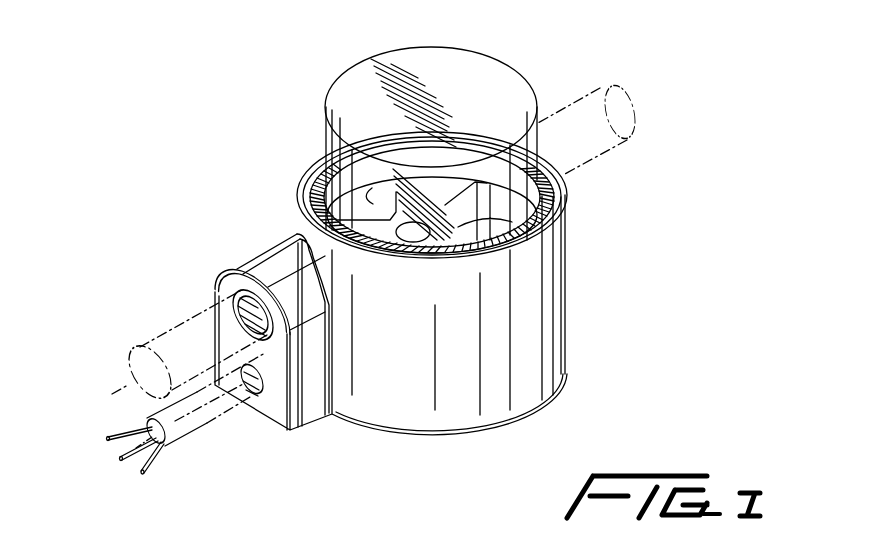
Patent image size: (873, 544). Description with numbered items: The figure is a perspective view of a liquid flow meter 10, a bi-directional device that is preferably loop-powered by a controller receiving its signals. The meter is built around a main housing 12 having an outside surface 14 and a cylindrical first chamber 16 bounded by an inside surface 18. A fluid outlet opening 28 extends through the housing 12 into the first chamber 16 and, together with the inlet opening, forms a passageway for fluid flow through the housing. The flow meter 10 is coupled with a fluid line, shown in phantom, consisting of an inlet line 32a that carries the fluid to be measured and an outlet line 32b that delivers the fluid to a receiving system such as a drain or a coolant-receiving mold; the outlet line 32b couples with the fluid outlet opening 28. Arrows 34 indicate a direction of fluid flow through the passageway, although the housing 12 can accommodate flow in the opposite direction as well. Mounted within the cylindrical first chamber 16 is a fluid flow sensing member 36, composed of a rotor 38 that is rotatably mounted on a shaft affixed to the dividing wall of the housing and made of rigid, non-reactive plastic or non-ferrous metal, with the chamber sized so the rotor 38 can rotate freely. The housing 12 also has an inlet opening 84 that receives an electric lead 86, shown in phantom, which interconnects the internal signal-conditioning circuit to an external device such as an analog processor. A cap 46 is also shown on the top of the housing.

The liquid flow meter 10 is at (168, 152).
The main housing 12 is at (413, 372).
The outside surface 14 is at (558, 245).
The cylindrical first chamber 16 is at (450, 437).
The inside surface 18 is at (375, 195).
The fluid outlet opening 28 is at (214, 300).
The inlet line 32a is at (598, 100).
The outlet line 32b is at (177, 340).
The arrows 34 is at (650, 92).
The fluid flow sensing member 36 is at (561, 266).
The rotor 38 is at (482, 182).
The cap 46 is at (407, 68).
The inlet opening 84 is at (243, 398).
The electric lead 86 is at (192, 422).